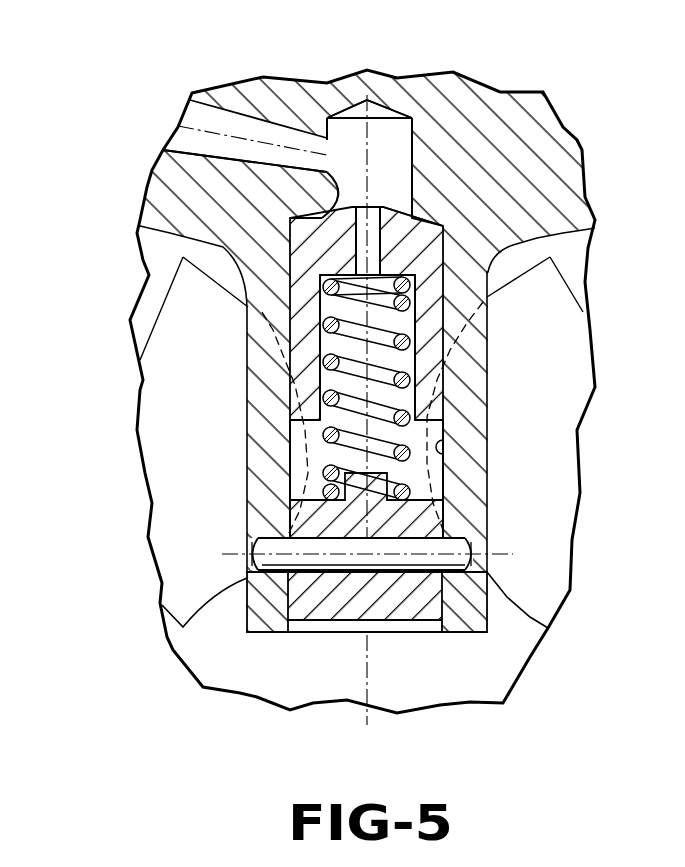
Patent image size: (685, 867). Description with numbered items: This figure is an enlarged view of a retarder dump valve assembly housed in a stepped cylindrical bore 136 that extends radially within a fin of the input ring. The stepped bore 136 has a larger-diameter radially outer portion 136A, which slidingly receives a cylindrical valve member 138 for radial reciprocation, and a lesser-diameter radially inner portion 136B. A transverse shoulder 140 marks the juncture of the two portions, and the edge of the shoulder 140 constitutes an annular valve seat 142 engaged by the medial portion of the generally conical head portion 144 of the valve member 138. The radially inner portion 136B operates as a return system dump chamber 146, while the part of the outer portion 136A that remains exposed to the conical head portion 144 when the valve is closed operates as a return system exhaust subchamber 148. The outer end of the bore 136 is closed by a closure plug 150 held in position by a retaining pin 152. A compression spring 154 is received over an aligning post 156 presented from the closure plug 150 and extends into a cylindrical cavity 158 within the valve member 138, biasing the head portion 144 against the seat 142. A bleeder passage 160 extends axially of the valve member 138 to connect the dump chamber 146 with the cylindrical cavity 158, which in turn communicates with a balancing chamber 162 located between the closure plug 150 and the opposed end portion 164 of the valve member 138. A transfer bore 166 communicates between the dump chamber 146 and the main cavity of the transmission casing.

The stepped cylindrical bore 136 is at (290, 603).
The radially outer portion of stepped bore 136A is at (443, 458).
The radially inner portion of stepped bore 136B is at (410, 150).
The cylindrical valve member 138 is at (423, 327).
The transverse shoulder 140 is at (303, 216).
The annular valve seat 142 is at (327, 172).
The conical head portion 144 is at (397, 207).
The return system dump chamber 146 is at (352, 150).
The return system exhaust subchamber 148 is at (445, 218).
The closure plug 150 is at (413, 593).
The retaining pin 152 is at (497, 555).
The compression spring 154 is at (327, 445).
The aligning post 156 is at (358, 488).
The cylindrical cavity 158 is at (388, 358).
The bleeder passage 160 is at (374, 236).
The balancing chamber 162 is at (305, 473).
The opposed end portion of valve member 164 is at (302, 417).
The transfer bore 166 is at (190, 122).